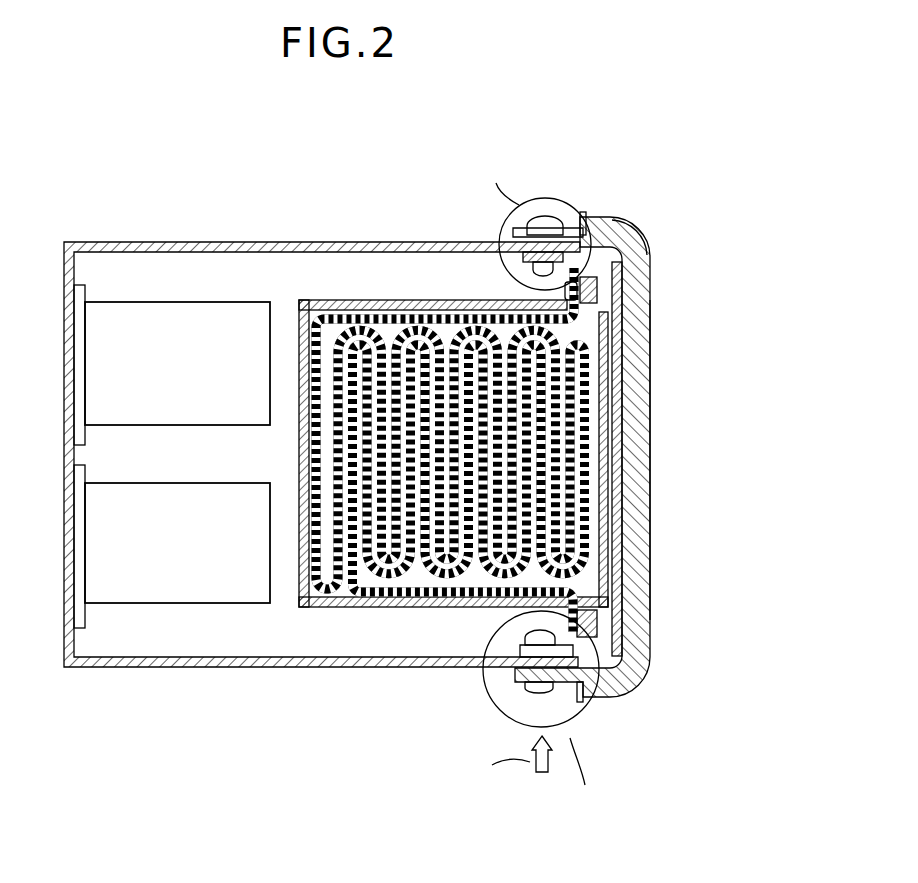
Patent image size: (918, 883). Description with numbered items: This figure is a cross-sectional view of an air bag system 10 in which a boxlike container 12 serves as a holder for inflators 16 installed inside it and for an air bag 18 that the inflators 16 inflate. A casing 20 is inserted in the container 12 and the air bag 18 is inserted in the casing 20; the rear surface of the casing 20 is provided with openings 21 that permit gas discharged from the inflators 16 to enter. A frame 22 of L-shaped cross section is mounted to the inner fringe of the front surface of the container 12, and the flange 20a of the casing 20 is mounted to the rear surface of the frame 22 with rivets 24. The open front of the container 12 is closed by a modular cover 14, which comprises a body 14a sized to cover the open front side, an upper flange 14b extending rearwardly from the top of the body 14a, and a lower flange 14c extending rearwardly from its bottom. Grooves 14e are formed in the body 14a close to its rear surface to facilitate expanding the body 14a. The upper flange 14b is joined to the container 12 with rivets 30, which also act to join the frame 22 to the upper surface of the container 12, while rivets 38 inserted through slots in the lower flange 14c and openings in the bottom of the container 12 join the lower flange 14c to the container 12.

The air bag system 10 is at (652, 207).
The container 12 is at (300, 668).
The modular cover 14 is at (654, 452).
The body 14a is at (654, 500).
The upper flange 14b is at (582, 214).
The lower flange 14c is at (520, 693).
The grooves 14e is at (622, 300).
The inflators 16 is at (186, 302).
The air bag 18 is at (332, 604).
The casing 20 is at (376, 598).
The flange 20a is at (548, 292).
The openings 21 is at (300, 316).
The frame 22 is at (648, 246).
The rivets 24 is at (620, 290).
The rivets 30 is at (540, 204).
The rivets 38 is at (572, 690).